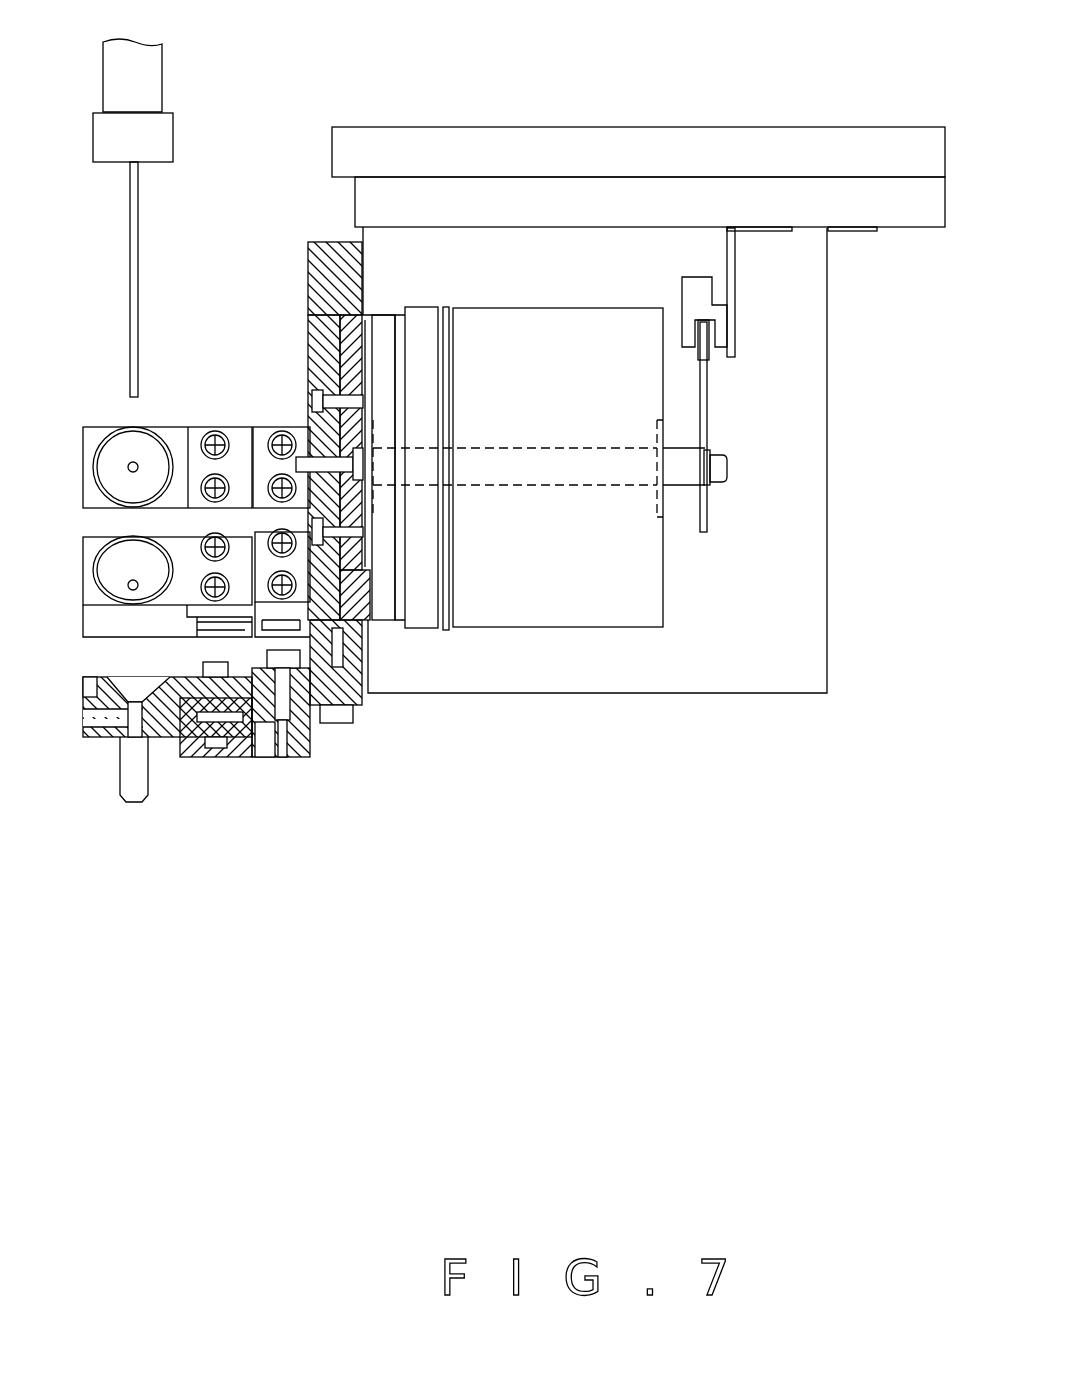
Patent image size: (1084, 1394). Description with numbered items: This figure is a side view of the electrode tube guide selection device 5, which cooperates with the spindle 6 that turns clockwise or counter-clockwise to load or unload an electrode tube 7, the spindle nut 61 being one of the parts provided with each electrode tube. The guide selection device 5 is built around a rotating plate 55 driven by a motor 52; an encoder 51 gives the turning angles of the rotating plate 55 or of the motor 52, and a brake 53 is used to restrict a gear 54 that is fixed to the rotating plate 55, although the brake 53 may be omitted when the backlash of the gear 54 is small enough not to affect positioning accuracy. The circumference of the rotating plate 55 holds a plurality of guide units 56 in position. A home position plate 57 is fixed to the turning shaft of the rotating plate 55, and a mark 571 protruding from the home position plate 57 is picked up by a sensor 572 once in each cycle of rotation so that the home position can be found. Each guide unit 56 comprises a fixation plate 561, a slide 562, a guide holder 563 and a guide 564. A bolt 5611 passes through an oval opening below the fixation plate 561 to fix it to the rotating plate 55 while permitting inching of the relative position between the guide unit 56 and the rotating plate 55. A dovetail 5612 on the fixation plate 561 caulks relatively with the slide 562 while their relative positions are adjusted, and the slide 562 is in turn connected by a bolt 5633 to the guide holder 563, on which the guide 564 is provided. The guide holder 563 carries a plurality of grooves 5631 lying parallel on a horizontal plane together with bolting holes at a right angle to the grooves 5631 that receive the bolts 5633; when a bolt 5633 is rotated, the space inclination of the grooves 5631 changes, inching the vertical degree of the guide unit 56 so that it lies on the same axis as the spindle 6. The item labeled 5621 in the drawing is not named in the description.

The electrode tube guide selection device 5 is at (870, 815).
The spindle 6 is at (148, 80).
The spindle nut 61 is at (145, 147).
The electrode tube 7 is at (135, 278).
The encoder 51 is at (382, 327).
The motor 52 is at (523, 330).
The brake 53 is at (418, 318).
The gear 54 is at (343, 327).
The rotating plate 55 is at (310, 292).
The guide unit 56 is at (93, 445).
The home position plate 57 is at (705, 400).
The mark 571 is at (702, 338).
The sensor 572 is at (692, 288).
The fixation plate 561 is at (368, 693).
The bolt 5611 is at (342, 717).
The slide 562 is at (313, 738).
The adjusting bolt 5621 is at (293, 758).
The dovetail 5612 is at (277, 750).
The guide holder 563 is at (190, 738).
The grooves 5631 is at (232, 702).
The bolts 5633 is at (215, 748).
The guide 564 is at (127, 788).